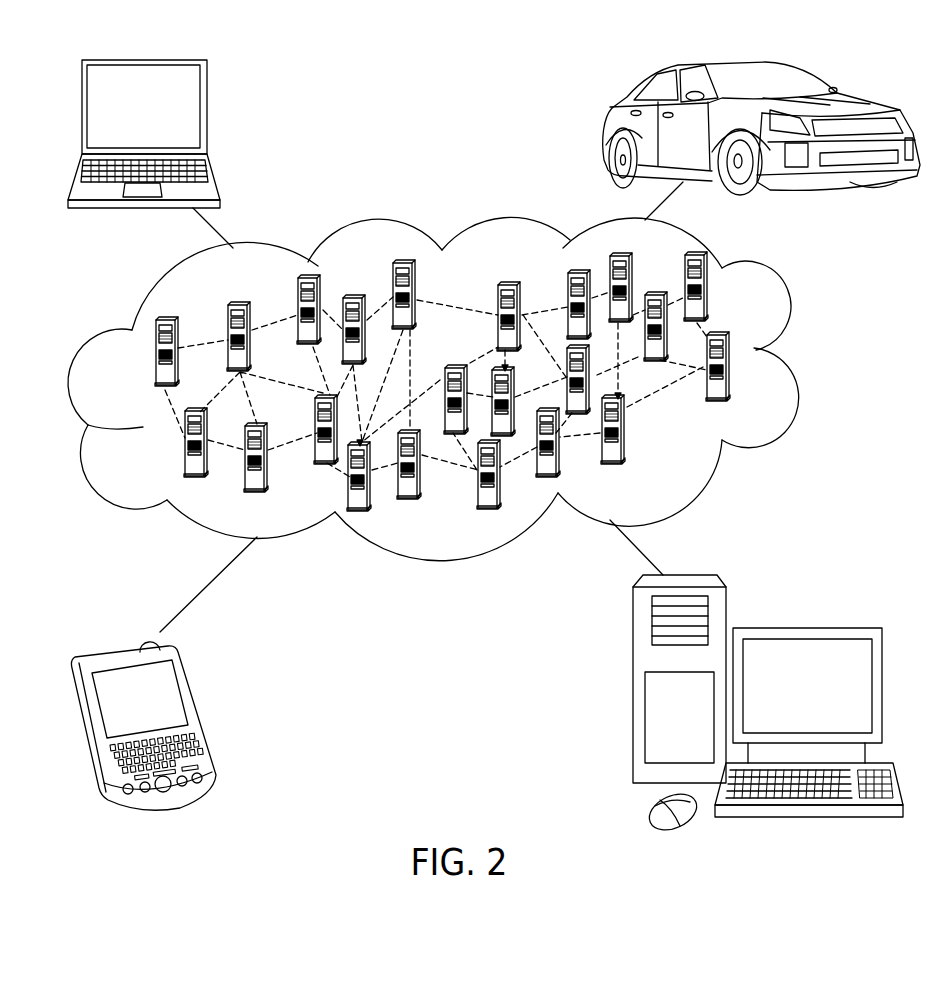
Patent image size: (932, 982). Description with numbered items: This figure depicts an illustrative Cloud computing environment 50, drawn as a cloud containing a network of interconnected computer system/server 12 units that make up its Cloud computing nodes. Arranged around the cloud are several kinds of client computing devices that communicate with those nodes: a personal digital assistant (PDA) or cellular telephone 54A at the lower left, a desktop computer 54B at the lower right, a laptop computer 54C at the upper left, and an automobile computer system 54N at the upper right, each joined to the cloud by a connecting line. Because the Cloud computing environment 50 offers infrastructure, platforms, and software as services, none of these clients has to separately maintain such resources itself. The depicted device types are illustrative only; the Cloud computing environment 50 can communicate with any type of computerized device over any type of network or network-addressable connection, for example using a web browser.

The computer system/server 12 is at (755, 392).
The Cloud computing environment 50 is at (805, 363).
The personal digital assistant (PDA) or cellular telephone 54A is at (198, 712).
The desktop computer 54B is at (805, 628).
The laptop computer 54C is at (207, 113).
The automobile computer system 54N is at (607, 127).